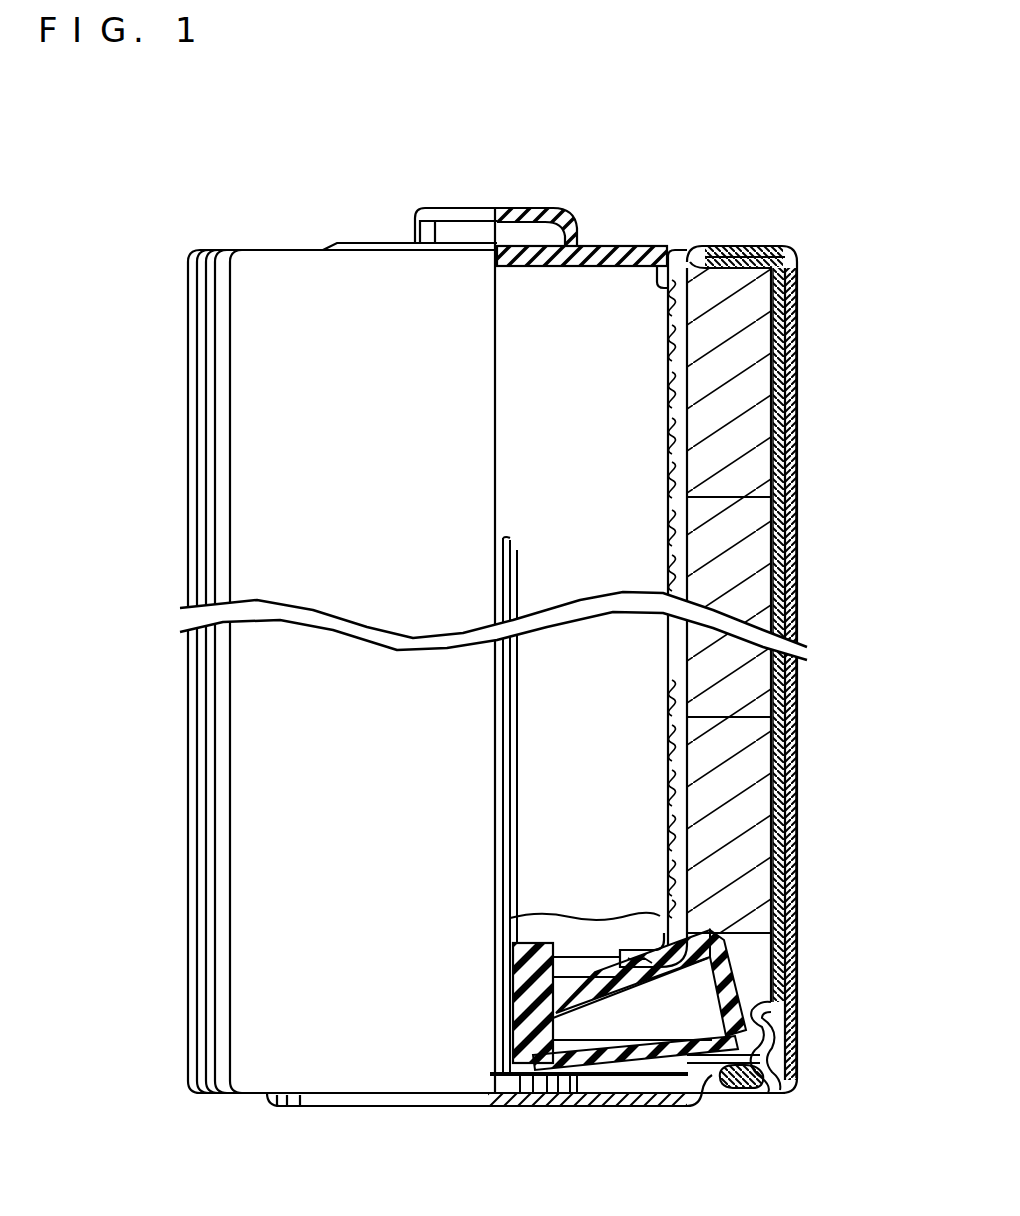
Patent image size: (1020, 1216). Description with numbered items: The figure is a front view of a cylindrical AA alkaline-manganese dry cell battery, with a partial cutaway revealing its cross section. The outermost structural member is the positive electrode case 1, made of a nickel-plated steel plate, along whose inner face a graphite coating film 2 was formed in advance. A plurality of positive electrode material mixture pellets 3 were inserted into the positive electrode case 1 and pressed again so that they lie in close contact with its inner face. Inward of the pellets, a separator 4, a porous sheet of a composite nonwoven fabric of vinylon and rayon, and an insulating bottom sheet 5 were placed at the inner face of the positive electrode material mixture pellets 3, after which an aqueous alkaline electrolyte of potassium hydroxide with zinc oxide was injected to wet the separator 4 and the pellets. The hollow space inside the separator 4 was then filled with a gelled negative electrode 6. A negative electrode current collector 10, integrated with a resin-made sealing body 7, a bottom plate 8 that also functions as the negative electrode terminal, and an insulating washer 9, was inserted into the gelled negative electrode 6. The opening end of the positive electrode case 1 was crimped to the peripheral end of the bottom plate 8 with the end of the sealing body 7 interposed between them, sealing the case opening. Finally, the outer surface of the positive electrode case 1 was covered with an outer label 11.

The positive electrode case 1 is at (793, 627).
The graphite coating film 2 is at (797, 307).
The positive electrode material mixture pellets 3 is at (750, 407).
The separator 4 is at (683, 355).
The bottom sheet 5 is at (645, 262).
The gelled negative electrode 6 is at (640, 830).
The sealing body 7 is at (515, 1073).
The bottom plate 8 is at (658, 1105).
The insulating washer 9 is at (578, 1073).
The negative electrode current collector 10 is at (493, 985).
The outer label 11 is at (797, 580).